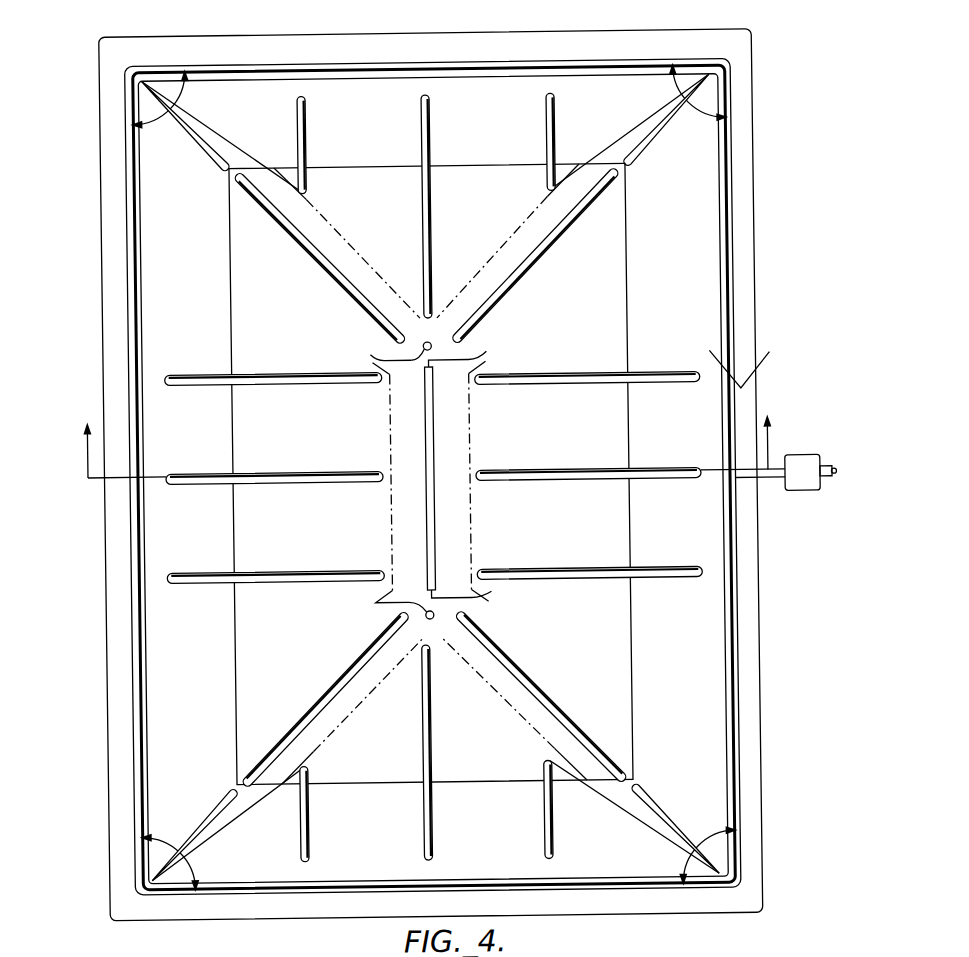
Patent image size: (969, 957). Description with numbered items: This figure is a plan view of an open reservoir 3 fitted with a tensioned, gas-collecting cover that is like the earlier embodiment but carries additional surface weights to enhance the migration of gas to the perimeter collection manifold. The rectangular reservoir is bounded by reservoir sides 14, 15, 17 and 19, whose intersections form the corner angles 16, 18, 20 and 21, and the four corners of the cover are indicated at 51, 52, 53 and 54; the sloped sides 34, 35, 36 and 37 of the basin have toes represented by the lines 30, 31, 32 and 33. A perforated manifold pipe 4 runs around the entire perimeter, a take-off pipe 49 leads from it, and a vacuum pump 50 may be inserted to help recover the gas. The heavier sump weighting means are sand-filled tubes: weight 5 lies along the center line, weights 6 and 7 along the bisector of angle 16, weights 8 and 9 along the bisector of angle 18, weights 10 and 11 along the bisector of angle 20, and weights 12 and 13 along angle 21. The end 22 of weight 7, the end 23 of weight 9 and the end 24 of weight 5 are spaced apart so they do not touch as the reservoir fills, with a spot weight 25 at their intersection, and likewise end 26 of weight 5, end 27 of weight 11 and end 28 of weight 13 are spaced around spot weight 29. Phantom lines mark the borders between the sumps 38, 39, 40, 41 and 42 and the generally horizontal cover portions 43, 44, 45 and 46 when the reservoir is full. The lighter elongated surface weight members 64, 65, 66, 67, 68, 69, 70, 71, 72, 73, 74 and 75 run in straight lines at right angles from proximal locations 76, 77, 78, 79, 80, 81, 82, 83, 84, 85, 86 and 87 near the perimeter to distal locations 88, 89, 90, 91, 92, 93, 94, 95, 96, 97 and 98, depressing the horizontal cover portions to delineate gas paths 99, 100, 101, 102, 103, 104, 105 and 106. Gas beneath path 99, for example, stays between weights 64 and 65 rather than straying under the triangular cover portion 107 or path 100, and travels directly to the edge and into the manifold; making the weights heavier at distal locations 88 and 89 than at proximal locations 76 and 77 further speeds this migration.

The open reservoir 3 is at (632, 66).
The manifold pipe 4 is at (732, 584).
The weight 5 is at (426, 522).
The weight 6 is at (412, 65).
The weight 7 is at (290, 230).
The weight 8 is at (652, 146).
The weight 9 is at (576, 226).
The weight 10 is at (654, 800).
The weight 11 is at (560, 705).
The weight 12 is at (205, 775).
The weight 13 is at (290, 718).
The reservoir side 14 is at (283, 68).
The reservoir side 15 is at (240, 885).
The angle 16 is at (186, 103).
The reservoir side 17 is at (150, 652).
The angle 18 is at (672, 106).
The reservoir side 19 is at (724, 182).
The angle 20 is at (678, 862).
The angle 21 is at (190, 870).
The end of weight 7 22 is at (401, 342).
The end of weight 9 23 is at (457, 342).
The end of weight 5 24 is at (488, 352).
The spot weight 25 is at (372, 354).
The end of weight 5 26 is at (490, 592).
The end of weight 11 27 is at (458, 614).
The end of weight 13 28 is at (400, 614).
The spot weight 29 is at (377, 602).
The line 30 is at (375, 166).
The line 31 is at (630, 430).
The line 32 is at (372, 782).
The line 33 is at (232, 628).
The slope side 34 is at (570, 103).
The slope side 35 is at (693, 679).
The slope side 36 is at (350, 860).
The slope side 37 is at (178, 305).
The sump 38 is at (320, 226).
The sump 39 is at (616, 212).
The sump 40 is at (471, 523).
The sump 41 is at (530, 656).
The sump 42 is at (325, 660).
The horizontal cover portion 43 is at (456, 213).
The horizontal cover portion 44 is at (492, 459).
The horizontal cover portion 45 is at (452, 738).
The horizontal cover portion 46 is at (337, 454).
The take-off pipe 49 is at (770, 484).
The vacuum pump 50 is at (802, 460).
The corner 51 is at (137, 74).
The corner 52 is at (733, 70).
The corner 53 is at (735, 884).
The corner 54 is at (138, 883).
The elongated surface weight member 64 is at (624, 375).
The elongated surface weight member 65 is at (620, 472).
The elongated surface weight member 66 is at (618, 572).
The elongated surface weight member 67 is at (540, 820).
The elongated surface weight member 68 is at (428, 810).
The elongated surface weight member 69 is at (305, 810).
The elongated surface weight member 70 is at (290, 571).
The elongated surface weight member 71 is at (290, 472).
The elongated surface weight member 72 is at (290, 372).
The elongated surface weight member 73 is at (302, 122).
The elongated surface weight member 74 is at (426, 124).
The elongated surface weight member 75 is at (551, 141).
The proximal location 76 is at (700, 386).
The proximal location 77 is at (700, 482).
The proximal location 78 is at (700, 572).
The proximal location 79 is at (552, 858).
The proximal location 80 is at (424, 860).
The proximal location 81 is at (300, 860).
The proximal location 82 is at (174, 572).
The proximal location 83 is at (174, 482).
The proximal location 84 is at (174, 381).
The proximal location 85 is at (302, 96).
The proximal location 86 is at (426, 96).
The proximal location 87 is at (551, 97).
The distal location 88 is at (477, 384).
The distal location 89 is at (477, 482).
The distal location 90 is at (477, 572).
The distal location 91 is at (542, 768).
The distal location 92 is at (420, 702).
The distal location 93 is at (305, 767).
The distal location 94 is at (384, 572).
The distal location 95 is at (384, 482).
The distal location 96 is at (384, 384).
The distal location 97 is at (310, 190).
The distal location 98 is at (434, 316).
The path 99 is at (533, 442).
The path 100 is at (551, 525).
The path 101 is at (451, 862).
The path 102 is at (336, 840).
The path 103 is at (265, 536).
The path 104 is at (272, 439).
The path 105 is at (325, 152).
The path 106 is at (440, 153).
The triangular cover portion 107 is at (643, 306).